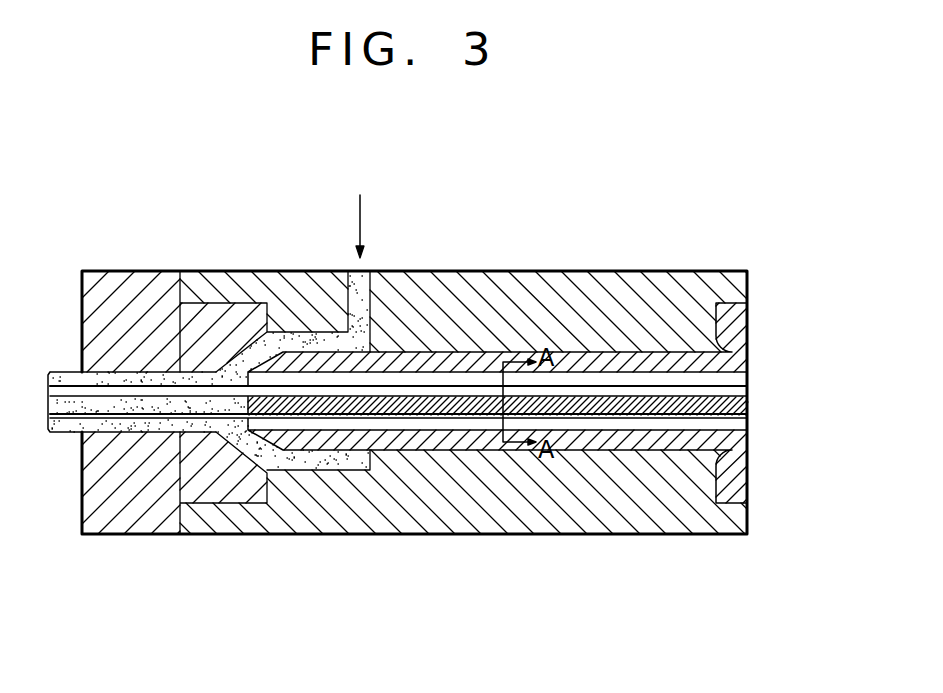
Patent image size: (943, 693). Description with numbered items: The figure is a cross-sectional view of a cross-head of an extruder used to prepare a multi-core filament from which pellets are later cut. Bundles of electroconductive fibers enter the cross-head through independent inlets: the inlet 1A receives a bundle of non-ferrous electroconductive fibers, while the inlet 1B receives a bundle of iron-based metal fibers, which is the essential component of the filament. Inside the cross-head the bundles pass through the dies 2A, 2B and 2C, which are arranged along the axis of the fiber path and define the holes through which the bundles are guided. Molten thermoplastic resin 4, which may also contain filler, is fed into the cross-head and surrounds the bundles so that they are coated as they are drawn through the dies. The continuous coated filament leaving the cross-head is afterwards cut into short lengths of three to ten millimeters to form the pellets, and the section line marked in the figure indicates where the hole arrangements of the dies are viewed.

The inlet for a bundle of non-ferrous electroconductive fibers 1A is at (747, 388).
The inlet for a bundle of iron-based metal fibers 1B is at (747, 414).
The die 2A is at (474, 403).
The die 2B is at (412, 422).
The die 2C is at (427, 362).
The molten thermoplastic resin 4 is at (307, 333).